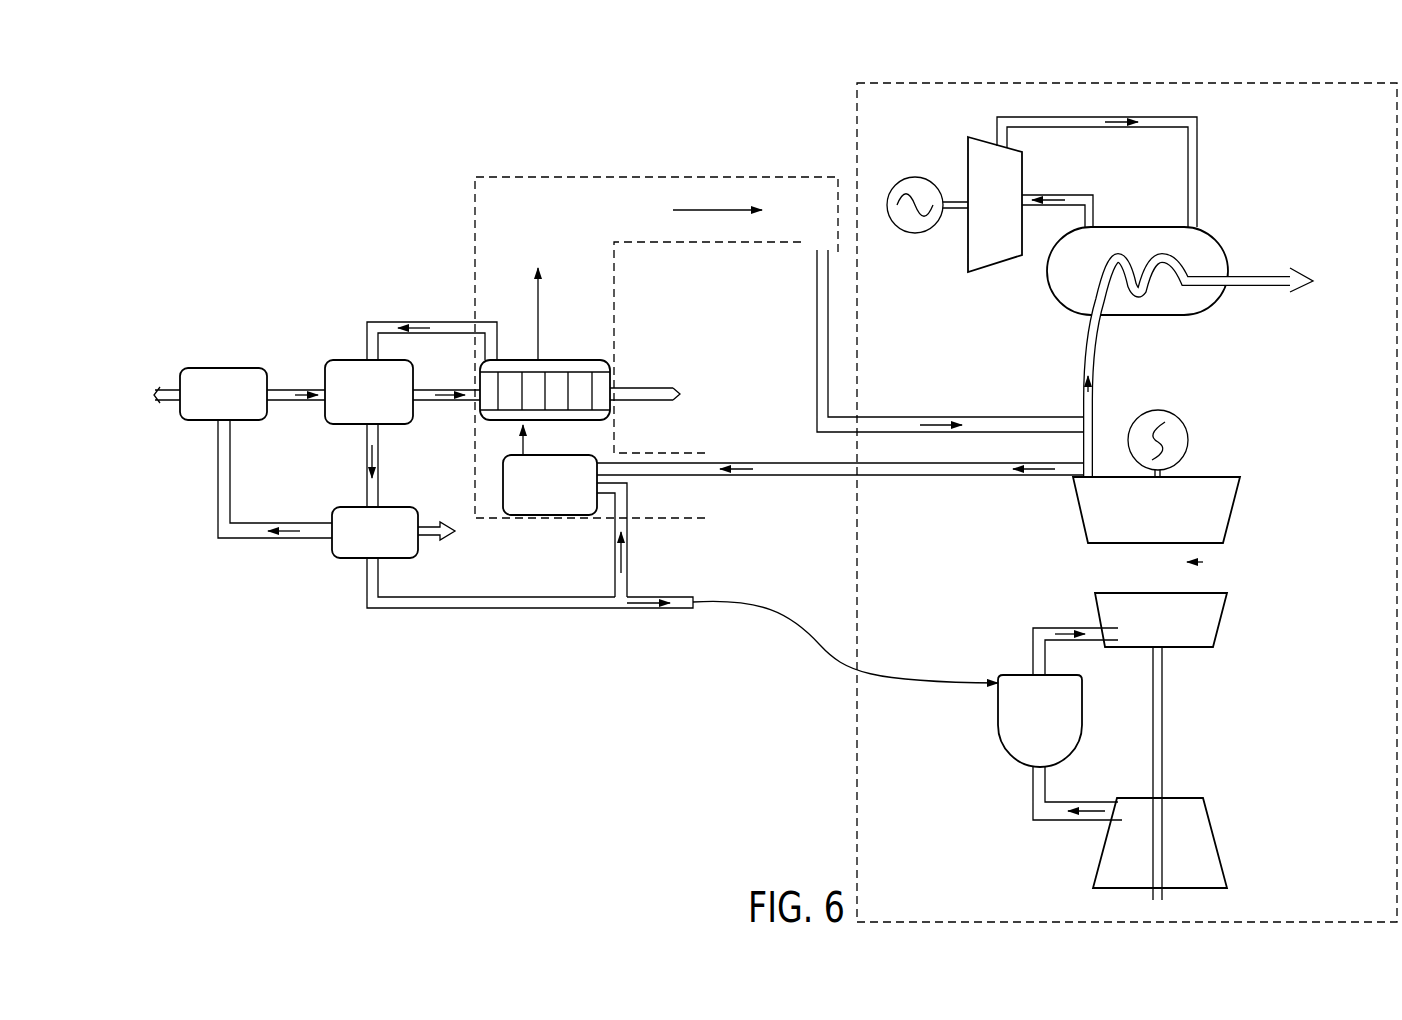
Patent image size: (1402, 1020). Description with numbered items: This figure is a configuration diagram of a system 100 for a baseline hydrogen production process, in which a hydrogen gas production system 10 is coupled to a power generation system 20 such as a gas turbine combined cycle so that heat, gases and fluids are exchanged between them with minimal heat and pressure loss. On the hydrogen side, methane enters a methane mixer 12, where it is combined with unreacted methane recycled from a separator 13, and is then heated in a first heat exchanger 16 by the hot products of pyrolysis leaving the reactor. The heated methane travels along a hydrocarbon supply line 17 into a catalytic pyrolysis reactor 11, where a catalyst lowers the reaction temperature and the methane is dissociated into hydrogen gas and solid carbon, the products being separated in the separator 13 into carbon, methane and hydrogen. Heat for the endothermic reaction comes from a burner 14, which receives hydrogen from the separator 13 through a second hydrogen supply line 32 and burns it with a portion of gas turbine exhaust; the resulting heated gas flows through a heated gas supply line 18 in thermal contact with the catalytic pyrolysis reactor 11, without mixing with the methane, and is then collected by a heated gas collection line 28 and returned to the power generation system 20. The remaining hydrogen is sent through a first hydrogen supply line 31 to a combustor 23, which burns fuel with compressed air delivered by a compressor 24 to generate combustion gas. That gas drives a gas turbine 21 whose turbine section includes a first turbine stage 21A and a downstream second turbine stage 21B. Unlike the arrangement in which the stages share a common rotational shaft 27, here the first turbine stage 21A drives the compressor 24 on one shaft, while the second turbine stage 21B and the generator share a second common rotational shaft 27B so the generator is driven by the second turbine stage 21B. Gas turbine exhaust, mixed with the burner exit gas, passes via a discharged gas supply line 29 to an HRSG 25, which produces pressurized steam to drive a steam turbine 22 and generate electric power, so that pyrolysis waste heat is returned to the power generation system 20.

The system 100 is at (800, 80).
The hydrogen gas production system 10 is at (596, 158).
The power generation system 20 is at (1163, 74).
The methane mixer 12 is at (227, 368).
The first heat exchanger 16 is at (387, 424).
The hydrocarbon supply line 17 is at (422, 401).
The separator 13 is at (342, 560).
The burner 14 is at (502, 481).
The heated gas supply line 18 is at (500, 455).
The heated gas collection line 28 is at (562, 230).
The catalytic pyrolysis reactor 11 is at (596, 362).
The first hydrogen supply line 31 is at (686, 610).
The second hydrogen supply line 32 is at (632, 587).
The steam turbine 22 is at (998, 268).
The HRSG 25 is at (1205, 235).
The discharged gas supply line 29 is at (1082, 386).
The second common rotational shaft 27B is at (1164, 472).
The second turbine stage 21B is at (1232, 513).
The gas turbine 21 is at (1203, 562).
The first turbine stage 21A is at (1223, 620).
The combustor 23 is at (1013, 759).
The compressor 24 is at (1217, 843).
The common rotational shaft 27 is at (1152, 717).